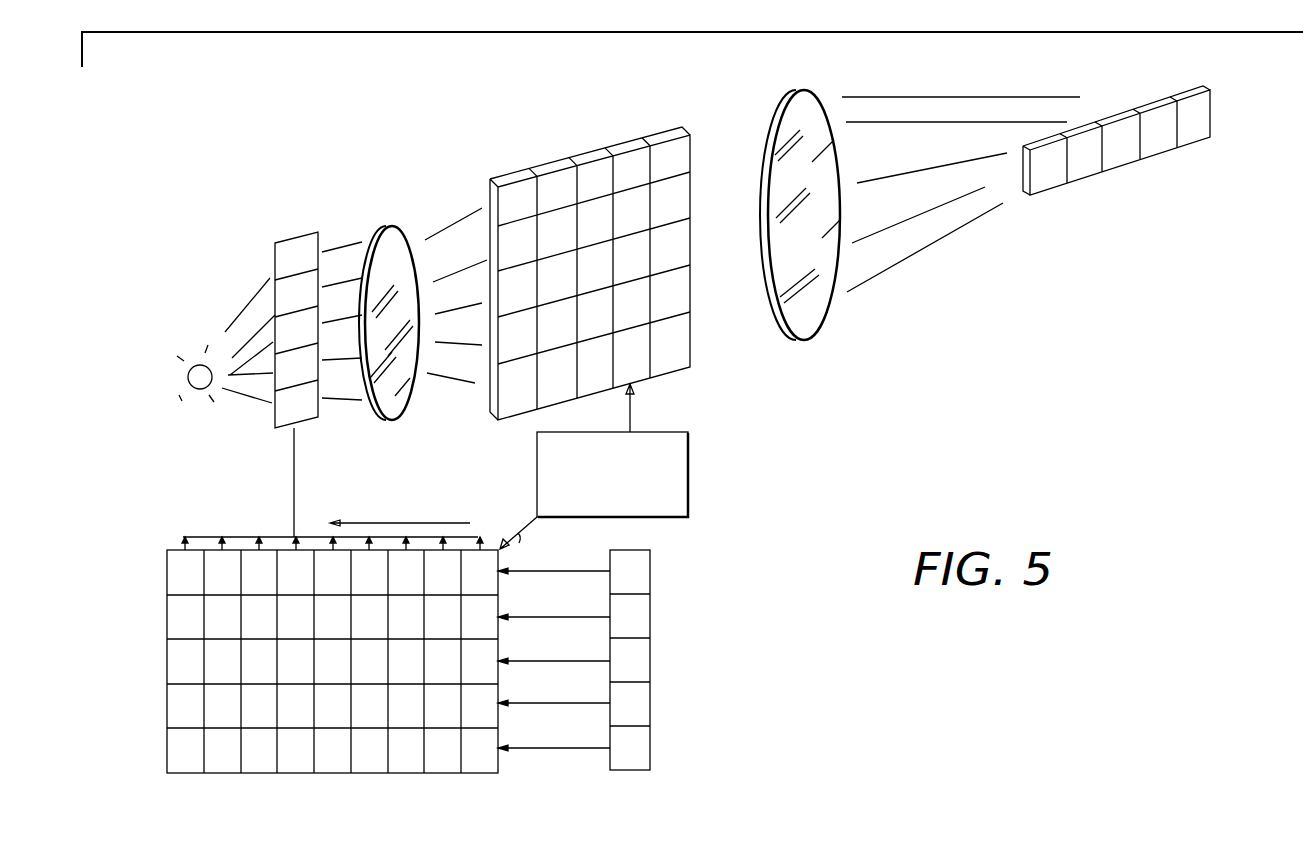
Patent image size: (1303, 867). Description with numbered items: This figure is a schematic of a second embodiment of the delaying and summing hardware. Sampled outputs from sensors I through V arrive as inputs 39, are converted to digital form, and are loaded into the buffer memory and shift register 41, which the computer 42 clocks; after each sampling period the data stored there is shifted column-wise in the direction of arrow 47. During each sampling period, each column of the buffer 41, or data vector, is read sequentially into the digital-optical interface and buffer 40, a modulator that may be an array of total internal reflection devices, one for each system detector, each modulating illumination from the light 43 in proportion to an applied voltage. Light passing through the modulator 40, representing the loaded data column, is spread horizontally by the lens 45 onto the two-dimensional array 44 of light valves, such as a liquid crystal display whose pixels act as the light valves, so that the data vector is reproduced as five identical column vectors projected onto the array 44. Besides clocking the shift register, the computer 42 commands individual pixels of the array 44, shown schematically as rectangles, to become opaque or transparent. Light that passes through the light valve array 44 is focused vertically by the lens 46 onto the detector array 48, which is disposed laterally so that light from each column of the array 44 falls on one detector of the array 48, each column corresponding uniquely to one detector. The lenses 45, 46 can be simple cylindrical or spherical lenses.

The inputs 39 is at (667, 642).
The digital-optical interface and buffer 40 is at (292, 238).
The buffer memory and shift register 41 is at (210, 553).
The computer 42 is at (688, 470).
The light 43 is at (196, 365).
The two-dimensional array of light valves 44 is at (582, 160).
The lens 45 is at (388, 226).
The lens 46 is at (796, 90).
The arrow 47 is at (407, 523).
The detector array 48 is at (1149, 97).